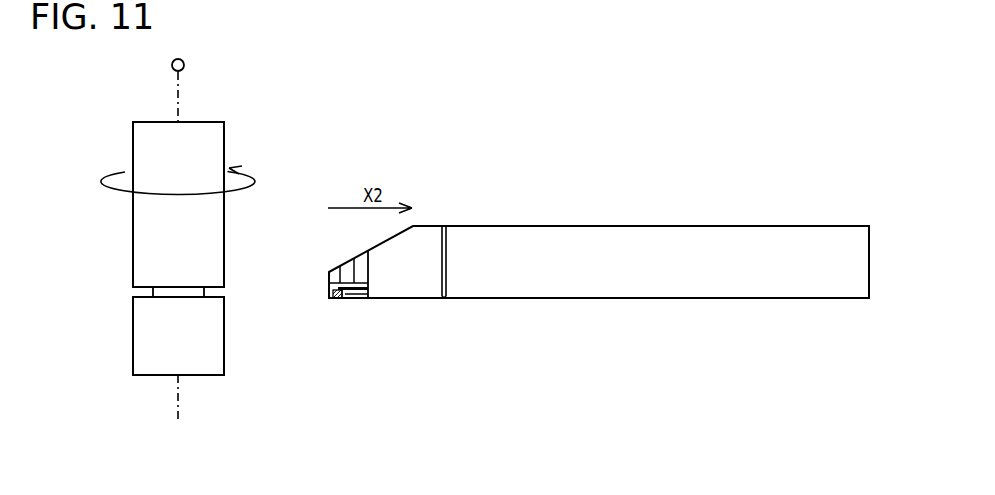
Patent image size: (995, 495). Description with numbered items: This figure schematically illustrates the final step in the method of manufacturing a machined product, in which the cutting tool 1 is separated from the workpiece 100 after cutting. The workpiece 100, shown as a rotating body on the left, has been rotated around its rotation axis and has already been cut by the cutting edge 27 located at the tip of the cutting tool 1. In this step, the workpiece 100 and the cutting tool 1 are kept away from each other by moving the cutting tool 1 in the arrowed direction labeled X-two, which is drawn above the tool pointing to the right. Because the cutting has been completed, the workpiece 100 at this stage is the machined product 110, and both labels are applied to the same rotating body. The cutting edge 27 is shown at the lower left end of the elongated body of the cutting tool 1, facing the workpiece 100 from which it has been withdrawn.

The cutting tool 1 is at (593, 260).
The cutting edge 27 is at (333, 294).
The workpiece 100 is at (221, 240).
The machined product 110 is at (224, 145).